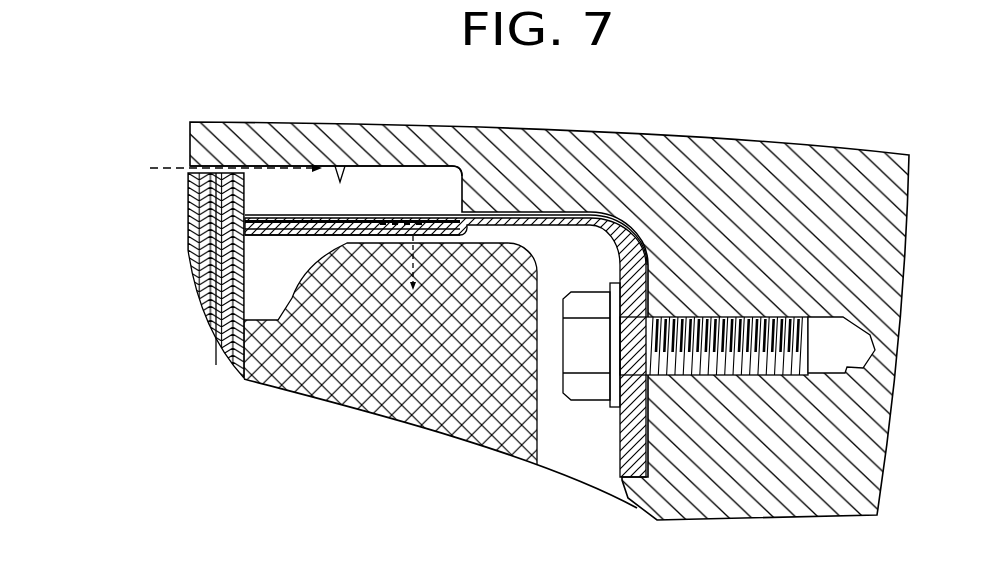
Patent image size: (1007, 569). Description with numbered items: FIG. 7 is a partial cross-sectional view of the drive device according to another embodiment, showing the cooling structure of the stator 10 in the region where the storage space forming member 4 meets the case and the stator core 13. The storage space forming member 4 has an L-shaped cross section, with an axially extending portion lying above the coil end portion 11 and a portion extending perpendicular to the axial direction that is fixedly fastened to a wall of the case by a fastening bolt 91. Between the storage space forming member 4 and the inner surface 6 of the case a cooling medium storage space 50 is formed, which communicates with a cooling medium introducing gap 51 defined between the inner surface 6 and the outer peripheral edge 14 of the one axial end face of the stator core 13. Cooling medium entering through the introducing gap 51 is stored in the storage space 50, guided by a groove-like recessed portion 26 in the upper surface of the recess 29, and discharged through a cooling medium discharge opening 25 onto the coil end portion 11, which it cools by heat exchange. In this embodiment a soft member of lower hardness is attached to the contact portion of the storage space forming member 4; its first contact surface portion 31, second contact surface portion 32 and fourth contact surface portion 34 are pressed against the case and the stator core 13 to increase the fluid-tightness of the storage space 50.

The storage space forming member 4 is at (646, 229).
The inner surface 6 is at (336, 166).
The stator 10 is at (250, 391).
The coil end portion 11 is at (357, 404).
The stator core 13 is at (220, 345).
The outer peripheral edge 14 is at (246, 164).
The cooling medium discharge opening 25 is at (422, 232).
The recessed portion 26 is at (273, 224).
The recess 29 is at (495, 212).
The first contact surface portion 31 is at (535, 217).
The second contact surface portion 32 is at (358, 226).
The fourth contact surface portion 34 is at (228, 225).
The cooling medium storage space 50 is at (441, 183).
The cooling medium introducing gap 51 is at (181, 163).
The fastening bolt 91 is at (586, 402).